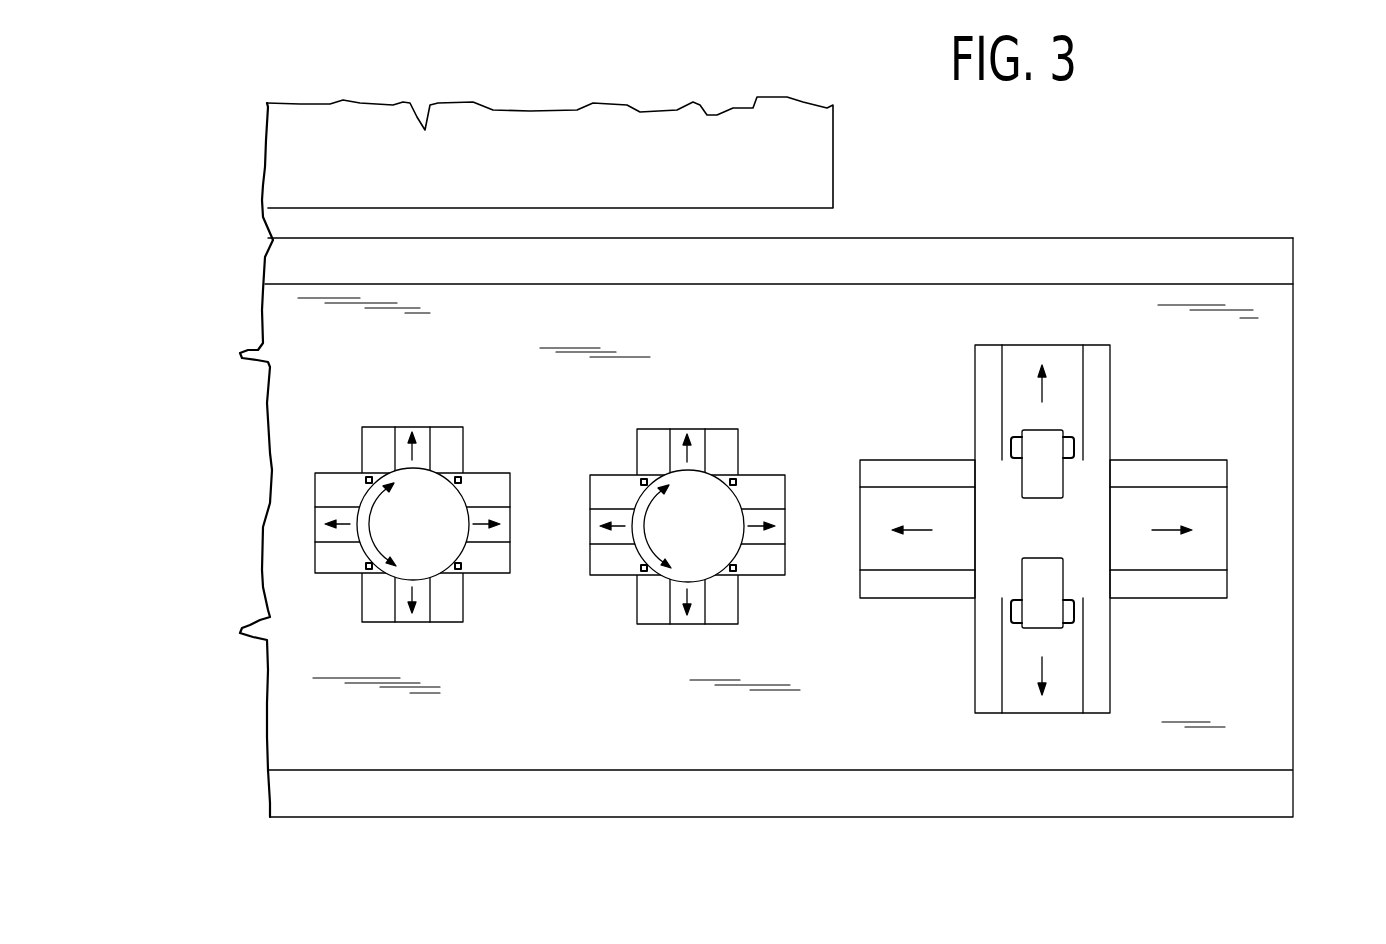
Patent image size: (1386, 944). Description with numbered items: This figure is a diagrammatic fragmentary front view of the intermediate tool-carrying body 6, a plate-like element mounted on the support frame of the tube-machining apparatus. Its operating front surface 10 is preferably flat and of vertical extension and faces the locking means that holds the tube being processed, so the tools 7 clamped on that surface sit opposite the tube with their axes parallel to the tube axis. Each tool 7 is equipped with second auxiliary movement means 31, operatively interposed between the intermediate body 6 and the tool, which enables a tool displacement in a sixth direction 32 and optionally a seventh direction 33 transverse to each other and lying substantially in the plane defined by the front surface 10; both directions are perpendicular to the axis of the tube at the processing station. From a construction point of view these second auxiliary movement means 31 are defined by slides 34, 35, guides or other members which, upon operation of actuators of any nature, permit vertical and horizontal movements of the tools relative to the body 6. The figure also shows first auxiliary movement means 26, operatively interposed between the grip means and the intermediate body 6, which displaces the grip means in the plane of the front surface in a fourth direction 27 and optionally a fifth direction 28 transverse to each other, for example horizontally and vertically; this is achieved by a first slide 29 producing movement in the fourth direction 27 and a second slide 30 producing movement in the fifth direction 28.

The intermediate tool-carrying body 6 is at (1070, 238).
The tool 7 is at (398, 563).
The operating front surface 10 is at (1260, 678).
The first auxiliary movement means 26 is at (1108, 533).
The fourth direction 27 is at (1162, 530).
The fifth direction 28 is at (1042, 392).
The first slide 29 is at (1208, 583).
The second slide 30 is at (1098, 365).
The second auxiliary movement means 31 is at (478, 576).
The sixth direction 32 is at (343, 522).
The seventh direction 33 is at (412, 450).
The slide 34 is at (373, 455).
The slide 35 is at (333, 558).